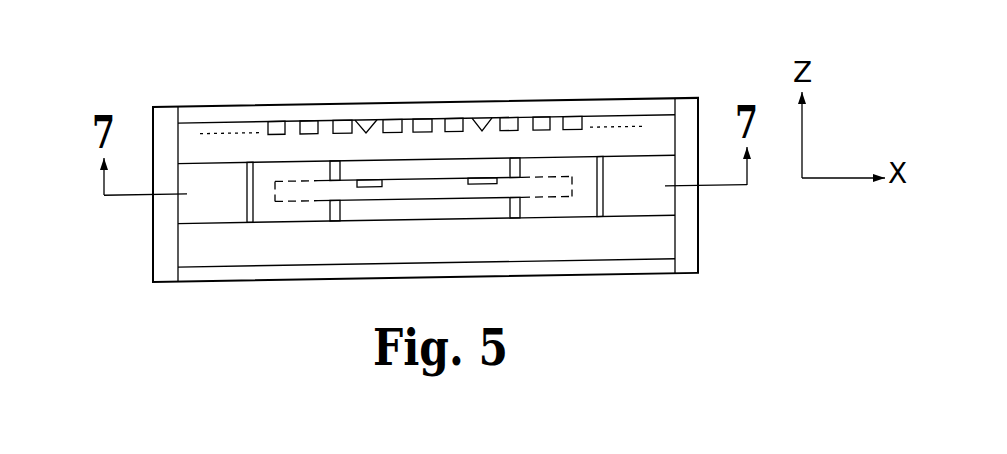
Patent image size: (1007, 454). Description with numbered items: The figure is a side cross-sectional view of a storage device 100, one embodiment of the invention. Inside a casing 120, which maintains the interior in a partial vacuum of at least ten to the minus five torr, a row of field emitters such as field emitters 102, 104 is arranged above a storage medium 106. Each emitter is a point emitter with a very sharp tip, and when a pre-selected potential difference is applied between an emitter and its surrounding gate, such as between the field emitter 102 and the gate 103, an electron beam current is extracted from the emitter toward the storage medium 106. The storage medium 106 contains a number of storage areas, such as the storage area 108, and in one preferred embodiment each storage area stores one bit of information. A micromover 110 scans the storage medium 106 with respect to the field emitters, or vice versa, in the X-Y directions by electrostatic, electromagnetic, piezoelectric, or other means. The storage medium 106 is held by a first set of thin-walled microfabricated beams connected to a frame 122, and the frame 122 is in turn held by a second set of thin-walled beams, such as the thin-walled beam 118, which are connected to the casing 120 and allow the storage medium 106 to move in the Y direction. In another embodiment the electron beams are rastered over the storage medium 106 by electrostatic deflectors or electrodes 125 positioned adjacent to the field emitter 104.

The storage device 100 is at (113, 92).
The field emitter 102 is at (369, 120).
The gate 103 is at (346, 120).
The field emitter 104 is at (482, 121).
The storage medium 106 is at (282, 204).
The storage area 108 is at (364, 181).
The micromover 110 is at (218, 225).
The thin-walled beam 118 is at (655, 186).
The casing 120 is at (683, 245).
The frame 122 is at (596, 172).
The electrostatic deflectors or electrodes 125 is at (427, 120).